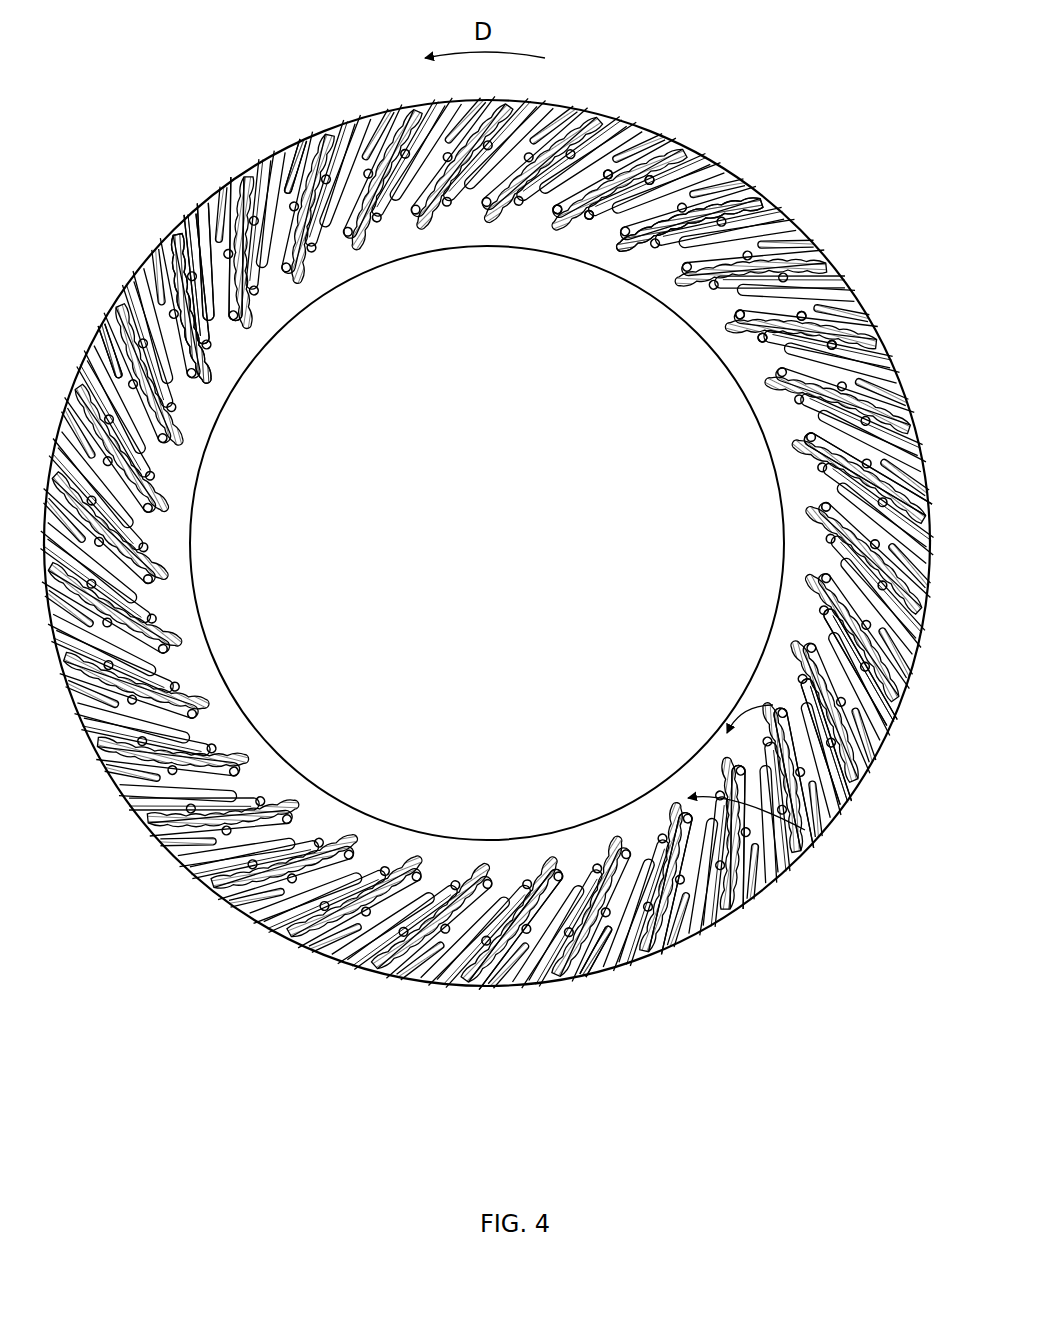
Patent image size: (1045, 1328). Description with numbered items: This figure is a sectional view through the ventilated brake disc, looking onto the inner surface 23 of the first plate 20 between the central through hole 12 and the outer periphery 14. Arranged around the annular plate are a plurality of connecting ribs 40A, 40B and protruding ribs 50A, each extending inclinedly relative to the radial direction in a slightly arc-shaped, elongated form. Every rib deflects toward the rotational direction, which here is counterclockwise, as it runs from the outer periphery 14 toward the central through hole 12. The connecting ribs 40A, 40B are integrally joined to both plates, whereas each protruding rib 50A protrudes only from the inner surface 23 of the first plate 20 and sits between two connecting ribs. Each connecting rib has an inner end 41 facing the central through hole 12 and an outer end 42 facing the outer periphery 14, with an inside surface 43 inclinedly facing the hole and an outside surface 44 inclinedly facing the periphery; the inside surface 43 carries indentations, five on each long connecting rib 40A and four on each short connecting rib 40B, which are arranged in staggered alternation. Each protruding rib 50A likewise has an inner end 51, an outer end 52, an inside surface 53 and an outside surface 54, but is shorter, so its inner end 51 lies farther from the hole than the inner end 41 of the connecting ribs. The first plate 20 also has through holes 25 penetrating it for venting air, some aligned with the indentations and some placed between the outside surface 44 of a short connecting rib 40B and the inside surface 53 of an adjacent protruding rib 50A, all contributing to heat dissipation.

The central through hole 12 is at (349, 779).
The outer periphery 14 is at (337, 968).
The first plate 20 is at (674, 127).
The inner surface 23 is at (648, 272).
The through holes 25 is at (668, 262).
The long connecting ribs 40A is at (845, 773).
The short connecting ribs 40B is at (808, 832).
The inner end 41 is at (105, 378).
The outer end 42 is at (195, 218).
The inside surface 43 is at (227, 207).
The outside surface 44 is at (193, 270).
The protruding rib 50A is at (747, 860).
The inner end 51 is at (198, 338).
The outer end 52 is at (313, 143).
The inside surface 53 is at (515, 950).
The outside surface 54 is at (610, 933).